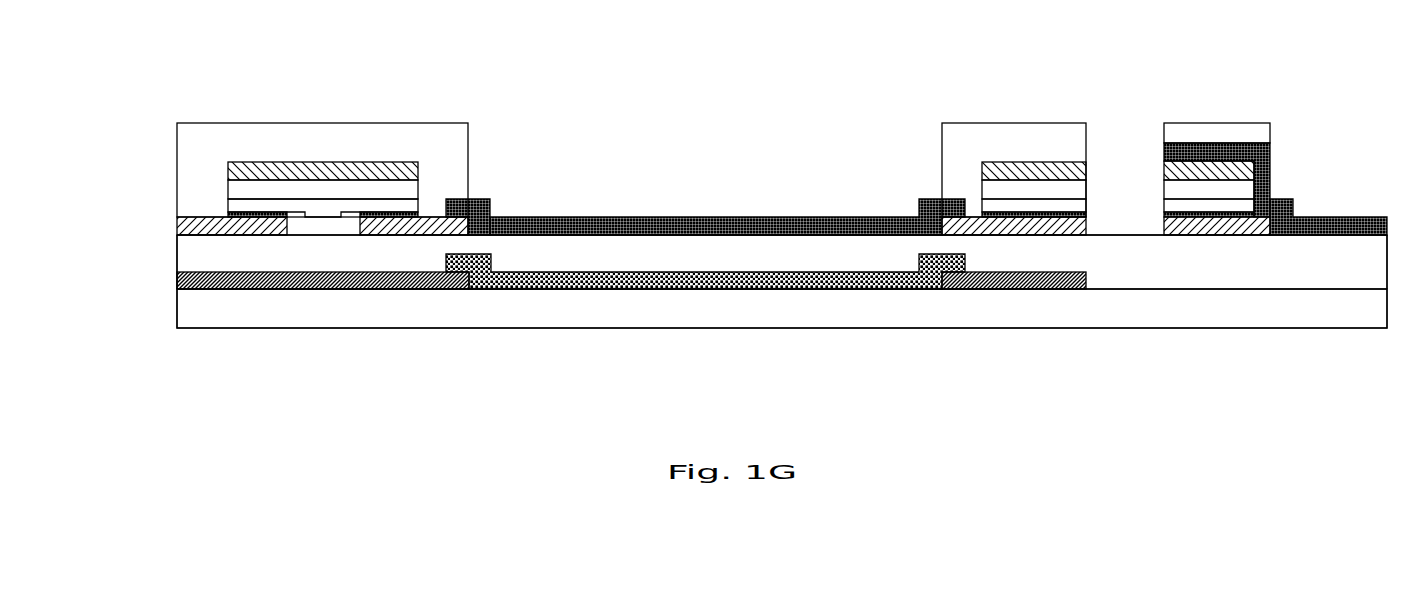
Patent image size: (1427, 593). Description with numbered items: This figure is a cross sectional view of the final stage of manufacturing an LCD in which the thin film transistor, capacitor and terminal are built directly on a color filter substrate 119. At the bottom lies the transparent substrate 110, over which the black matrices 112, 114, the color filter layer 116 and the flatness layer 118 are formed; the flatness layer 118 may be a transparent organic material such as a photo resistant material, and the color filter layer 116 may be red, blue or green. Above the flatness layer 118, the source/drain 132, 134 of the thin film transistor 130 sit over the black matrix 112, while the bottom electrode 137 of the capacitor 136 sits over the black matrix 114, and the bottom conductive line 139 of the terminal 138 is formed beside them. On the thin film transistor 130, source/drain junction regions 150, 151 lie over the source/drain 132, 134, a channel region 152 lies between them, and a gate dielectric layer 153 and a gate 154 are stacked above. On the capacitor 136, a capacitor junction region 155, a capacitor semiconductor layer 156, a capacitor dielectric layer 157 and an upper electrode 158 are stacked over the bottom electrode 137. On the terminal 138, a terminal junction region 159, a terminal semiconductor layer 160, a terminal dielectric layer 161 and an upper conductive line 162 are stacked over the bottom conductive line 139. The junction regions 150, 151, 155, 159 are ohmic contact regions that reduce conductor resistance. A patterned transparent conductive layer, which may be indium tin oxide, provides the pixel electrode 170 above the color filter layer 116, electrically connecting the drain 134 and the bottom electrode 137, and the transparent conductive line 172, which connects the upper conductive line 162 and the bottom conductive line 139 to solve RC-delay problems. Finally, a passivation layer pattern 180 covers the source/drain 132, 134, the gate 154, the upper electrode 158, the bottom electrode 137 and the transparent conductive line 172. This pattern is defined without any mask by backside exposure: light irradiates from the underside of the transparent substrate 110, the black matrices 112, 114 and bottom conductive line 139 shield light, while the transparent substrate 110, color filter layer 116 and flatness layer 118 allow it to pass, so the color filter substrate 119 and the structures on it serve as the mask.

The transparent substrate 110 is at (187, 308).
The black matrix 112 is at (187, 280).
The black matrix 114 is at (1086, 280).
The color filter layer 116 is at (675, 282).
The flatness layer 118 is at (187, 255).
The color filter substrate 119 is at (107, 223).
The thin film transistor 130 is at (352, 113).
The source 132 is at (178, 225).
The drain 134 is at (435, 225).
The capacitor 136 is at (1002, 122).
The bottom electrode 137 is at (973, 227).
The terminal 138 is at (1193, 141).
The bottom conductive line 139 is at (1165, 227).
The source junction region 150 is at (242, 212).
The drain junction region 151 is at (395, 208).
The channel region 152 is at (278, 205).
The gate dielectric layer 153 is at (326, 188).
The gate 154 is at (364, 170).
The capacitor junction region 155 is at (977, 215).
The capacitor semiconductor layer 156 is at (990, 205).
The capacitor dielectric layer 157 is at (1032, 190).
The upper electrode 158 is at (1068, 176).
The terminal junction region 159 is at (1165, 207).
The terminal semiconductor layer 160 is at (1165, 190).
The terminal dielectric layer 161 is at (1165, 172).
The upper conductive line 162 is at (1165, 152).
The pixel electrode 170 is at (688, 223).
The transparent conductive line 172 is at (1357, 223).
The passivation layer pattern 180 is at (200, 128).